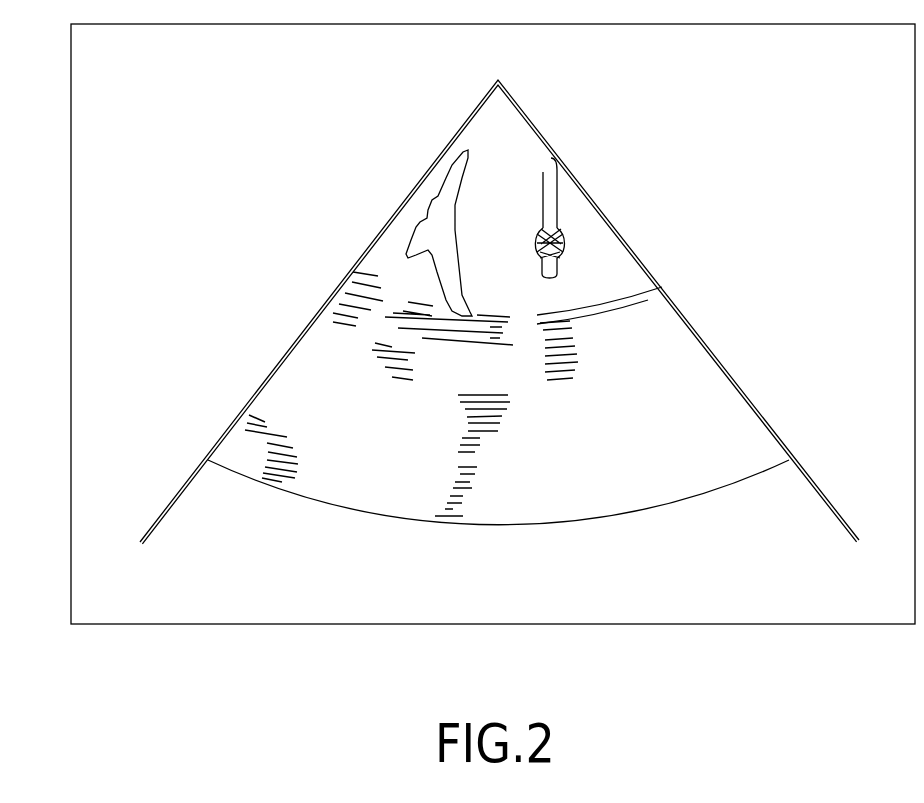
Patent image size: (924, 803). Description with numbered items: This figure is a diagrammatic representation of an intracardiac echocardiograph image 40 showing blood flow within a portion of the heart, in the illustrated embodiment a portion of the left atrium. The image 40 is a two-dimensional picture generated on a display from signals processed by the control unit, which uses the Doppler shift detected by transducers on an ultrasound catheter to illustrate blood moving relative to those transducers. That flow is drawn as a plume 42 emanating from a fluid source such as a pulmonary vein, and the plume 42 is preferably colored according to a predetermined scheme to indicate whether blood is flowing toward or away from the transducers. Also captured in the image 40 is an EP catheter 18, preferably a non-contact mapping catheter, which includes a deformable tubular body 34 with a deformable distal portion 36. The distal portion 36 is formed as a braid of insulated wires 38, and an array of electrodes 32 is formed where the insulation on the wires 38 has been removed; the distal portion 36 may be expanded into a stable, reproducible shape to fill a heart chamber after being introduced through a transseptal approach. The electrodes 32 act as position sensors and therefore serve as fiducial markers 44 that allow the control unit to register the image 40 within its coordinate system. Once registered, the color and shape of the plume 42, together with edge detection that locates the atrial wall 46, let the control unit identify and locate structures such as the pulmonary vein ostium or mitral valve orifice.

The image 40 is at (90, 158).
The EP catheter 18 is at (562, 190).
The deformable tubular body 34 is at (543, 172).
The electrodes 32 is at (558, 227).
The insulated wires 38 is at (535, 230).
The fiducial markers 44 is at (535, 248).
The deformable distal portion 36 is at (592, 262).
The plume 42 is at (432, 232).
The atrial wall 46 is at (506, 297).